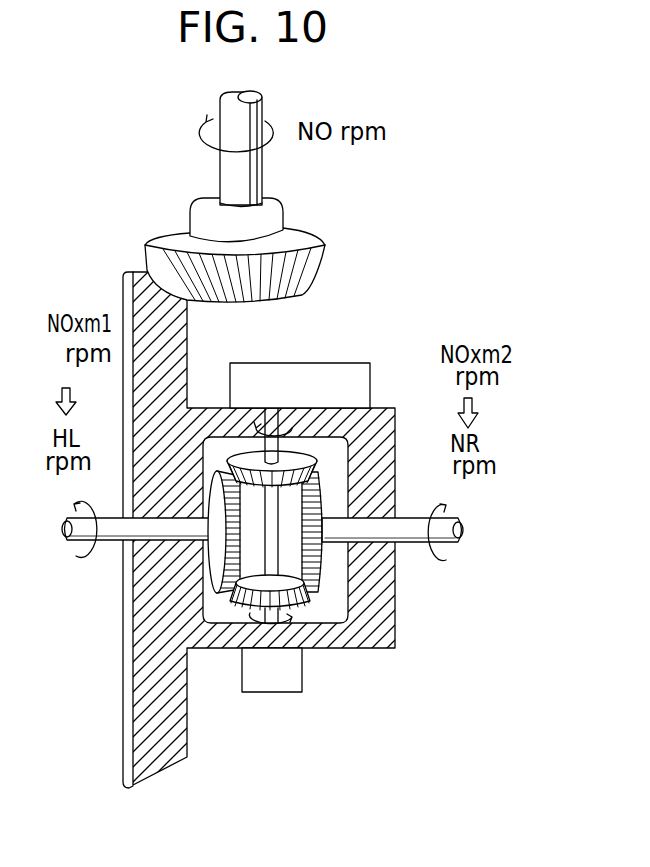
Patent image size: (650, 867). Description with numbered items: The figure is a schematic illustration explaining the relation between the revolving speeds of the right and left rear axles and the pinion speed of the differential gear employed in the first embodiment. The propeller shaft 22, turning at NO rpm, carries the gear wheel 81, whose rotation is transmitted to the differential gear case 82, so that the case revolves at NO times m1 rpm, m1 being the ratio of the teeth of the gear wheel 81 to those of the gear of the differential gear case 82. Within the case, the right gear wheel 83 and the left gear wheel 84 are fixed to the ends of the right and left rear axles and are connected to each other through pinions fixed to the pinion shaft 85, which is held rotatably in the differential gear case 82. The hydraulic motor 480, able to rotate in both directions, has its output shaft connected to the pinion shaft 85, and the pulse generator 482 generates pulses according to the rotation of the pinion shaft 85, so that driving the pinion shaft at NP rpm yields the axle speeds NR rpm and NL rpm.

The propeller shaft 22 is at (252, 118).
The gear wheel 81 is at (303, 240).
The differential gear case 82 is at (167, 737).
The right gear wheel 83 is at (219, 582).
The left gear wheel 84 is at (315, 502).
The pinion shaft 85 is at (272, 562).
The hydraulic motor 480 is at (327, 373).
The pulse generator 482 is at (284, 683).